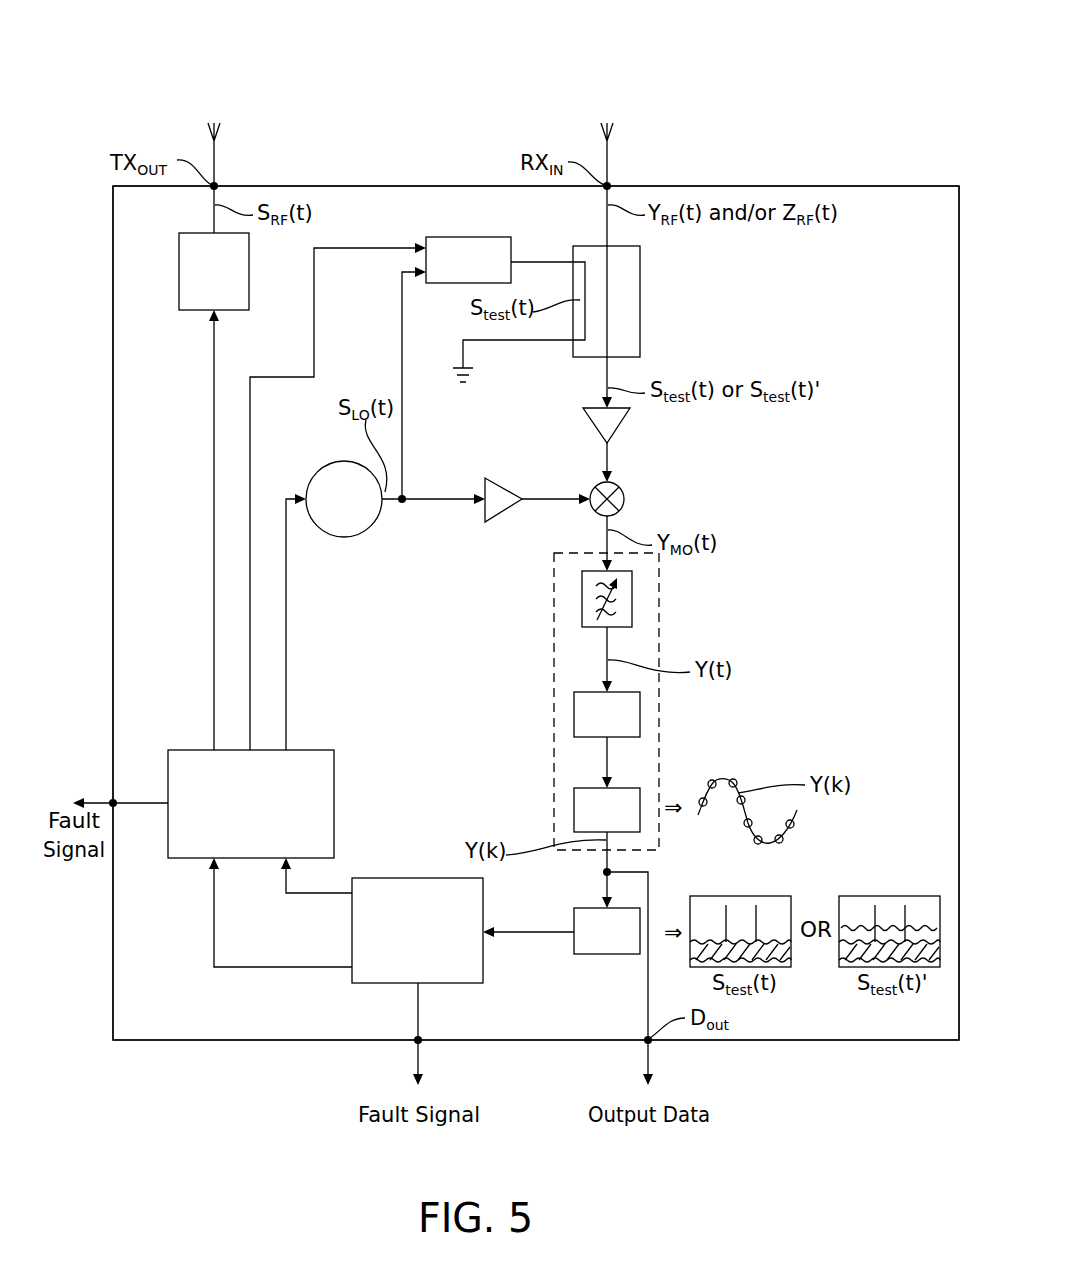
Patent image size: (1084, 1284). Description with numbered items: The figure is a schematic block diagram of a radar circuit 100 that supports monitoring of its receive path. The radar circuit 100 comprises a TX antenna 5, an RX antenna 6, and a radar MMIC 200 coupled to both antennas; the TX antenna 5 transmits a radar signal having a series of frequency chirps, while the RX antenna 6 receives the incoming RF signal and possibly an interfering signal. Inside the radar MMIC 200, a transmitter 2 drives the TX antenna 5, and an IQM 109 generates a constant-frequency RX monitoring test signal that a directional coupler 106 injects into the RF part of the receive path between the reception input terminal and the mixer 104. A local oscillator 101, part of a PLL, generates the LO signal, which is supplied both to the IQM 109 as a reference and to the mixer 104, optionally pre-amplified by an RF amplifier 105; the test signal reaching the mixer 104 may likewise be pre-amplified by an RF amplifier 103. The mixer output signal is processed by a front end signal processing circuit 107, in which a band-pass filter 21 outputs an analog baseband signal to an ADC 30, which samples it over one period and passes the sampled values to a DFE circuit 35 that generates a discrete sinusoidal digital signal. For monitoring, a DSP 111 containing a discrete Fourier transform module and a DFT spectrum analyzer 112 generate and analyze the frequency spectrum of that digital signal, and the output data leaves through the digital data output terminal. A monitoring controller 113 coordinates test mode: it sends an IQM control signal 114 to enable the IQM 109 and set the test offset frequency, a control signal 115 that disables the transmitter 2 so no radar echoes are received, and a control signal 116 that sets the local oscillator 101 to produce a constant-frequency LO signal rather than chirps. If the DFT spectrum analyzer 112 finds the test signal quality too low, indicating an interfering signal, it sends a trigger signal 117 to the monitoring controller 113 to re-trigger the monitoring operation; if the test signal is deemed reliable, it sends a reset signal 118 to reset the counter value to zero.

The radar circuit 100 is at (146, 40).
The radar MMIC 200 is at (386, 186).
The transmitter 2 is at (178, 272).
The TX antenna 5 is at (222, 128).
The RX antenna 6 is at (615, 128).
The IQM 109 is at (470, 237).
The directional coupler 106 is at (640, 303).
The RF amplifier 103 is at (620, 425).
The mixer 104 is at (625, 505).
The RF amplifier 105 is at (505, 490).
The local oscillator 101 is at (344, 537).
The front end signal processing circuit 107 is at (553, 703).
The band-pass filter 21 is at (633, 600).
The ADC 30 is at (641, 715).
The DFE circuit 35 is at (573, 808).
The DSP 111 is at (605, 954).
The DFT spectrum analyzer 112 is at (484, 958).
The monitoring controller 113 is at (335, 803).
The IQM control signal 114 is at (312, 362).
The control signal 115 is at (212, 618).
The control signal 116 is at (287, 655).
The trigger signal 117 is at (212, 908).
The reset signal 118 is at (314, 894).